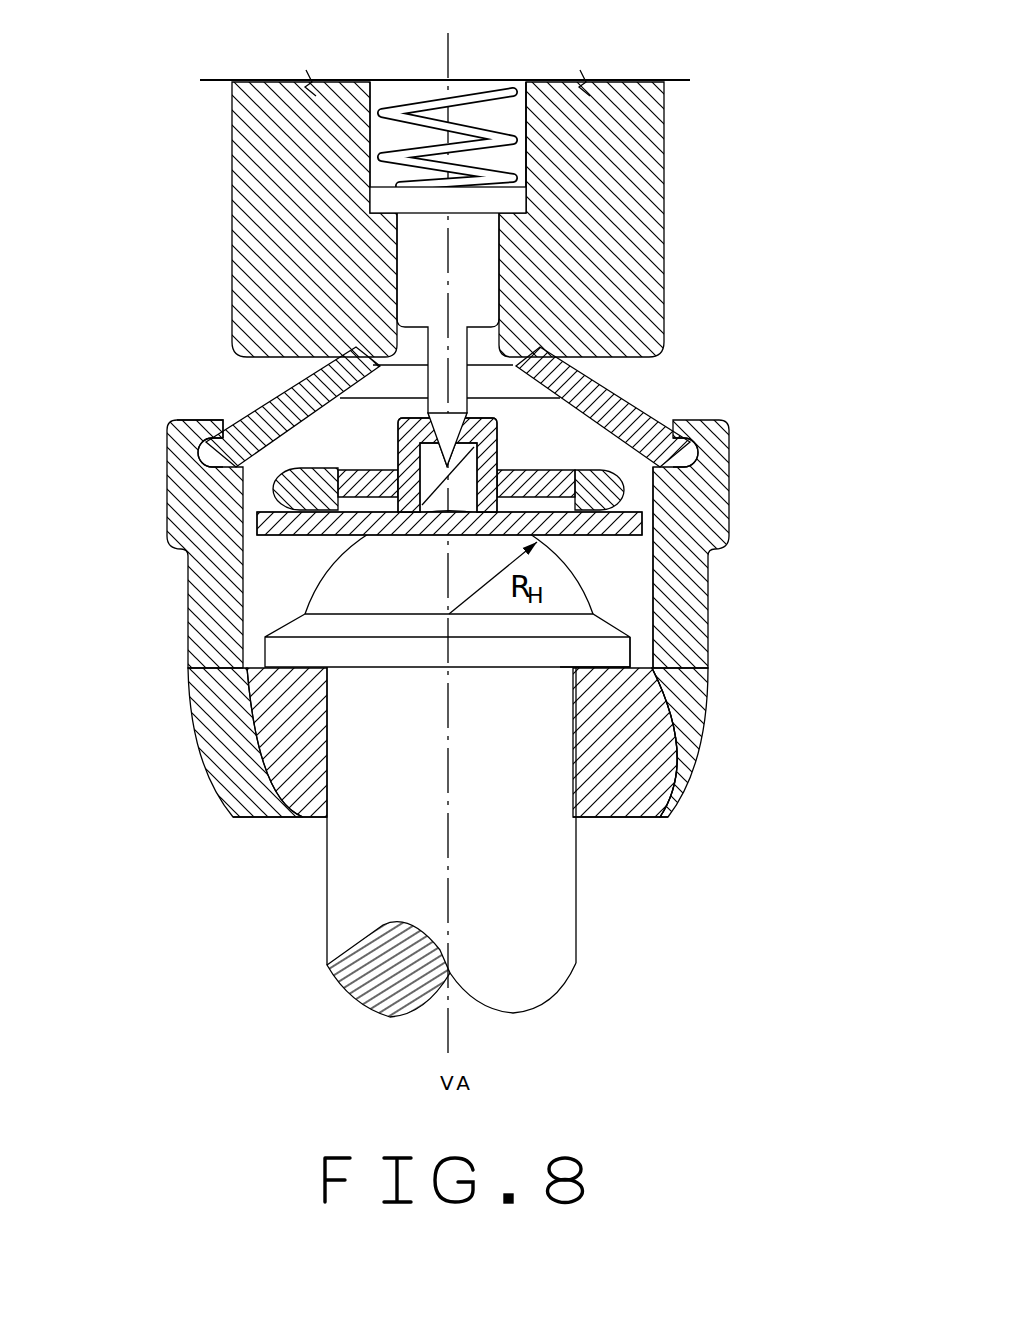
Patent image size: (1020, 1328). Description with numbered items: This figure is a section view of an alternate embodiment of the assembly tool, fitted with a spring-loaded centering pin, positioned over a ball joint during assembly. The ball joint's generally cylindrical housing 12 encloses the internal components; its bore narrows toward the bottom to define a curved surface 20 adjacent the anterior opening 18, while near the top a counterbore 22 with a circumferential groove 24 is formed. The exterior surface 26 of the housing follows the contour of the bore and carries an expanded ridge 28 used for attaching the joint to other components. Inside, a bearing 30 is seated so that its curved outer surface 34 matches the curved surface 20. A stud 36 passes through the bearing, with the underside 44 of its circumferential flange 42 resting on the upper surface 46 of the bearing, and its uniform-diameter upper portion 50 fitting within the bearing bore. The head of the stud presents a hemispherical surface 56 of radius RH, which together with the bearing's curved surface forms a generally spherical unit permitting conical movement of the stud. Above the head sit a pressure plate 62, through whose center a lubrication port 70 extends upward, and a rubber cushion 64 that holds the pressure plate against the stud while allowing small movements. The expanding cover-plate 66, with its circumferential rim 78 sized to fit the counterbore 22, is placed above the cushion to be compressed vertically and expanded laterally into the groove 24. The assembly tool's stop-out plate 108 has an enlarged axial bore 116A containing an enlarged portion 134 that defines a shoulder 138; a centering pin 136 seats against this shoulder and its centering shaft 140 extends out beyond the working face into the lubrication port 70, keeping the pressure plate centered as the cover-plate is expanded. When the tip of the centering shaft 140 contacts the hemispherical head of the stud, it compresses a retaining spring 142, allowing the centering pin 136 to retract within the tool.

The housing 12 is at (175, 767).
The anterior opening 18 is at (275, 838).
The curved surface 20 is at (645, 770).
The counterbore 22 is at (230, 424).
The circumferential groove 24 is at (213, 455).
The exterior surface 26 is at (709, 726).
The expanded ridge 28 is at (165, 514).
The bearing 30 is at (616, 713).
The curved outer surface 34 is at (618, 805).
The stud 36 is at (579, 916).
The circumferential flange 42 is at (286, 650).
The underside of flange 44 is at (614, 656).
The upper surface of bearing 46 is at (288, 670).
The upper portion 50 is at (513, 897).
The hemispherical surface 56 is at (305, 587).
The pressure plate 62 is at (657, 525).
The rubber cushion 64 is at (629, 488).
The expanding cover-plate 66 is at (623, 394).
The lubrication port 70 is at (502, 442).
The circumferential rim 78 is at (694, 452).
The stop-out plate 108 is at (665, 172).
The enlarged axial bore 116A is at (524, 152).
The enlarged portion 134 is at (507, 115).
The centering pin 136 is at (475, 350).
The shoulder 138 is at (381, 222).
The centering shaft 140 is at (418, 424).
The retaining spring 142 is at (410, 144).